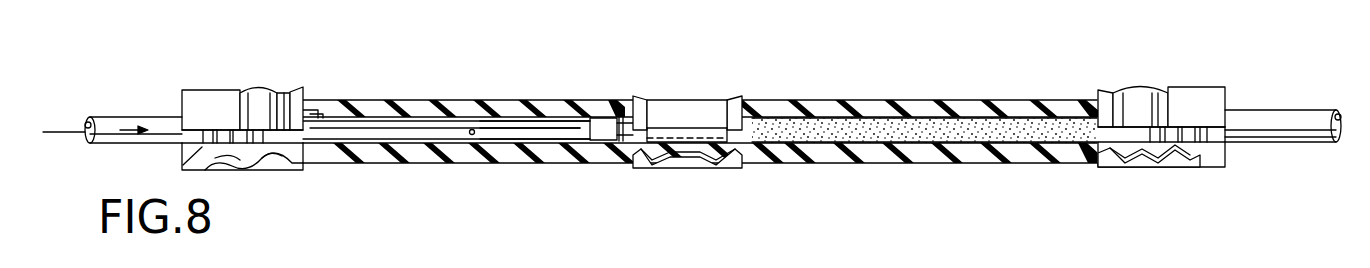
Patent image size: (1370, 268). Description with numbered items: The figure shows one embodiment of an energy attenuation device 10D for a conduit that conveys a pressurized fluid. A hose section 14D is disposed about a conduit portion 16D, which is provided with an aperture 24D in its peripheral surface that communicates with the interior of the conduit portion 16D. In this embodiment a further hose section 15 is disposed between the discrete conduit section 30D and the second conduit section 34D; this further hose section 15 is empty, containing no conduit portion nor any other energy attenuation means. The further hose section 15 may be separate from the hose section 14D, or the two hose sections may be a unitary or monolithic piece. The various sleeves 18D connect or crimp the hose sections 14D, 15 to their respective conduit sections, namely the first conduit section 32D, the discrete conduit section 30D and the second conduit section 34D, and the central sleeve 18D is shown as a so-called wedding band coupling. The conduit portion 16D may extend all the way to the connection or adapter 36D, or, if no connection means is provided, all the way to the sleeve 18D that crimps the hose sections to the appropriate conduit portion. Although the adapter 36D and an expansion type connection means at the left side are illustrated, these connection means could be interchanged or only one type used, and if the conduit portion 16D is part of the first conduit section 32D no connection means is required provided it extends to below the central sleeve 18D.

The energy attenuation device 10D is at (782, 84).
The hose section 14D is at (560, 100).
The further hose section 15 is at (928, 152).
The conduit portion 16D is at (410, 131).
The sleeve 18D is at (226, 91).
The aperture 24D is at (472, 128).
The discrete conduit section 30D is at (550, 132).
The first conduit section 32D is at (130, 116).
The second conduit section 34D is at (1303, 141).
The adapter 36D is at (603, 131).